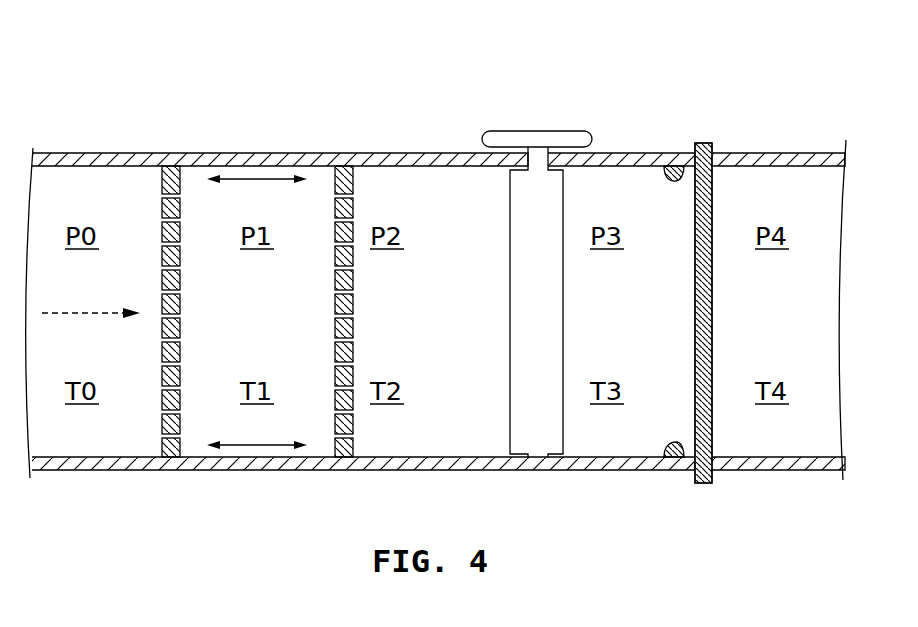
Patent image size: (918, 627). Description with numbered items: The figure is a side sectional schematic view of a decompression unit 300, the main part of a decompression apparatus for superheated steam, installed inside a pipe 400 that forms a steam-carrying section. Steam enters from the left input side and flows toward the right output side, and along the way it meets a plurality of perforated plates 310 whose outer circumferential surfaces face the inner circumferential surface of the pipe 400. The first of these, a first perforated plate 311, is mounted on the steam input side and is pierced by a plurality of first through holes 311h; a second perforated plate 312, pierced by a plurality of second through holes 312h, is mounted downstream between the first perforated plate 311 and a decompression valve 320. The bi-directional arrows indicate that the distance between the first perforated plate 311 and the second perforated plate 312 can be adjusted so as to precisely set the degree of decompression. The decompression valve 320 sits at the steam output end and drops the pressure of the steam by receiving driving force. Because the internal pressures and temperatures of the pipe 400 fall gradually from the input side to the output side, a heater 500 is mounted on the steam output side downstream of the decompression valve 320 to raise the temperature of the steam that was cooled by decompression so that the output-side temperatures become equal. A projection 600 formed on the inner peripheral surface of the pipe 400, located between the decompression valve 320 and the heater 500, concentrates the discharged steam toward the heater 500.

The decompression unit 300 is at (430, 62).
The perforated plates 310 is at (225, 48).
The first perforated plate 311 is at (173, 166).
The first through holes 311h is at (163, 197).
The second perforated plate 312 is at (345, 166).
The second through holes 312h is at (338, 214).
The decompression valve 320 is at (517, 131).
The pipe 400 is at (99, 153).
The heater 500 is at (704, 143).
The projection 600 is at (673, 182).